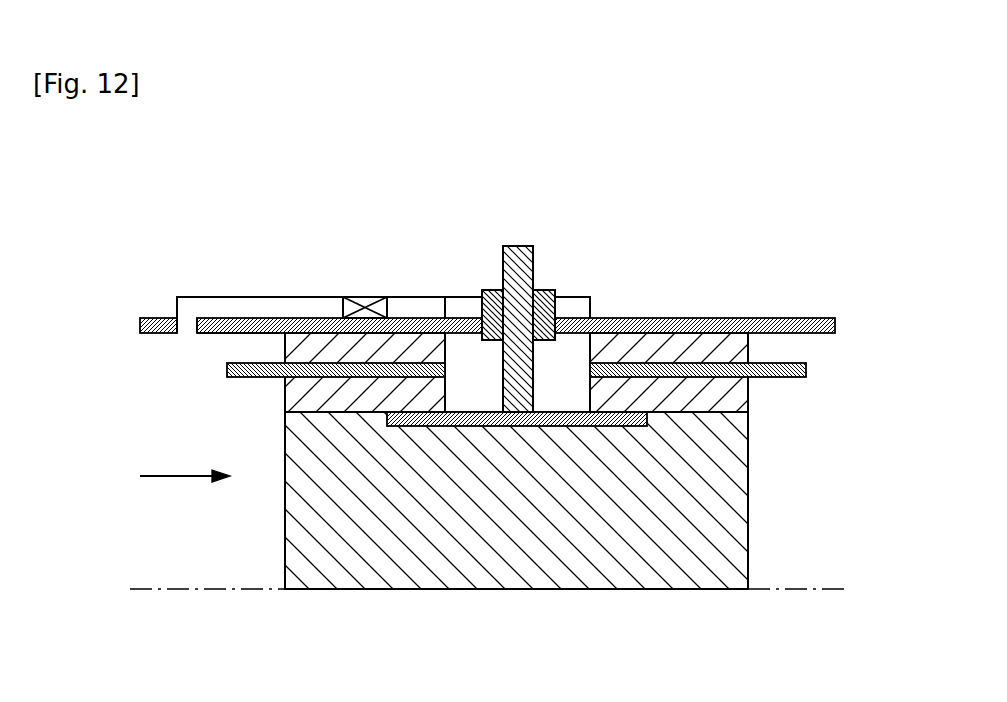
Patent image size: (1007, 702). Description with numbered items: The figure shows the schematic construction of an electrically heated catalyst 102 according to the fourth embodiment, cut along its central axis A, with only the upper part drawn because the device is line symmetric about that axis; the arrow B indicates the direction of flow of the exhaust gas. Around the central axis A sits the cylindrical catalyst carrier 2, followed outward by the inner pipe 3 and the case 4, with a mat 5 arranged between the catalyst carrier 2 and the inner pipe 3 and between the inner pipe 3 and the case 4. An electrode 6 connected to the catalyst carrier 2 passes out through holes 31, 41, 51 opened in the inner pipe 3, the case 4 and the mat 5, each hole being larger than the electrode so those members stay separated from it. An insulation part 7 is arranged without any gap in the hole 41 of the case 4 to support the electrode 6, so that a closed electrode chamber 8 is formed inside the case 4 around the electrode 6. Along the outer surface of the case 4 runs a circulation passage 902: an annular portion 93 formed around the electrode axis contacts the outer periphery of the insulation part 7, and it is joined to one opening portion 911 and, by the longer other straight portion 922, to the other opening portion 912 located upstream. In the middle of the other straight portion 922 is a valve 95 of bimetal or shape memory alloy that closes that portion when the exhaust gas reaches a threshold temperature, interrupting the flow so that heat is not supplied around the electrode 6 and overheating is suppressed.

The electrically heated catalyst 102 is at (477, 383).
The catalyst carrier 2 is at (740, 523).
The inner pipe 3 is at (483, 330).
The hole 31 is at (588, 368).
The case 4 is at (487, 265).
The hole 41 is at (563, 304).
The mat 5 is at (575, 341).
The hole 51 is at (582, 338).
The electrode 6 is at (518, 250).
The insulation part 7 is at (545, 303).
The electrode chamber 8 is at (463, 385).
The circulation passage 902 is at (339, 317).
The one opening portion 911 is at (237, 333).
The other opening portion 912 is at (187, 337).
The other straight portion 922 is at (235, 307).
The annular portion 93 is at (463, 303).
The valve 95 is at (367, 298).
The central axis A is at (765, 588).
The direction of flow of exhaust gas B is at (172, 477).